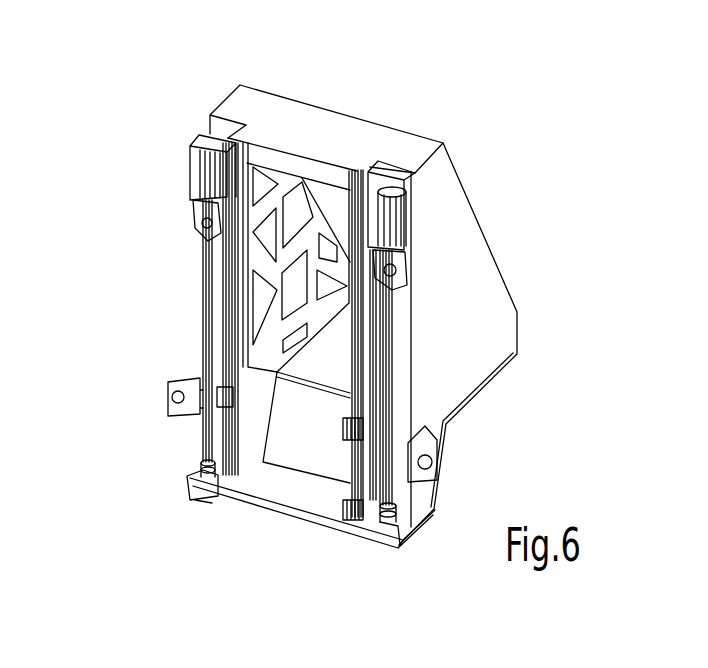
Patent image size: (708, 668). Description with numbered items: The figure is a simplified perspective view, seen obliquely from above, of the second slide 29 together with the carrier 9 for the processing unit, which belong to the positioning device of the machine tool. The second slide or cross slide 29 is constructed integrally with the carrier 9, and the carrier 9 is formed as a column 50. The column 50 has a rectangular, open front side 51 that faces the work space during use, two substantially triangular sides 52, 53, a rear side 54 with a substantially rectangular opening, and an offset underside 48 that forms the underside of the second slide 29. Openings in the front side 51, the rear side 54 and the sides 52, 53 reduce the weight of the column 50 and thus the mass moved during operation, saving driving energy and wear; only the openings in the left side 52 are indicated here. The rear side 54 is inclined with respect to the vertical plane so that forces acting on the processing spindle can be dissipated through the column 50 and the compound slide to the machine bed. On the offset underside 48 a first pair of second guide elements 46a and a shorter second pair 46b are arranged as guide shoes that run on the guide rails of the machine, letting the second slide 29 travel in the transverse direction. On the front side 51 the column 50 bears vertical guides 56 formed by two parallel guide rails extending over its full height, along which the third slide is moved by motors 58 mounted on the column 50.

The carrier 9 is at (497, 147).
The second slide 29 is at (210, 511).
The first pair of second guide elements 46a is at (197, 492).
The second pair of second guide elements 46b is at (502, 377).
The underside 48 is at (312, 522).
The column 50 is at (209, 110).
The front side 51 is at (200, 354).
The left side 52 is at (200, 267).
The side 53 is at (477, 292).
The rear side 54 is at (457, 160).
The vertical guides 56 is at (203, 293).
The motors 58 is at (192, 178).